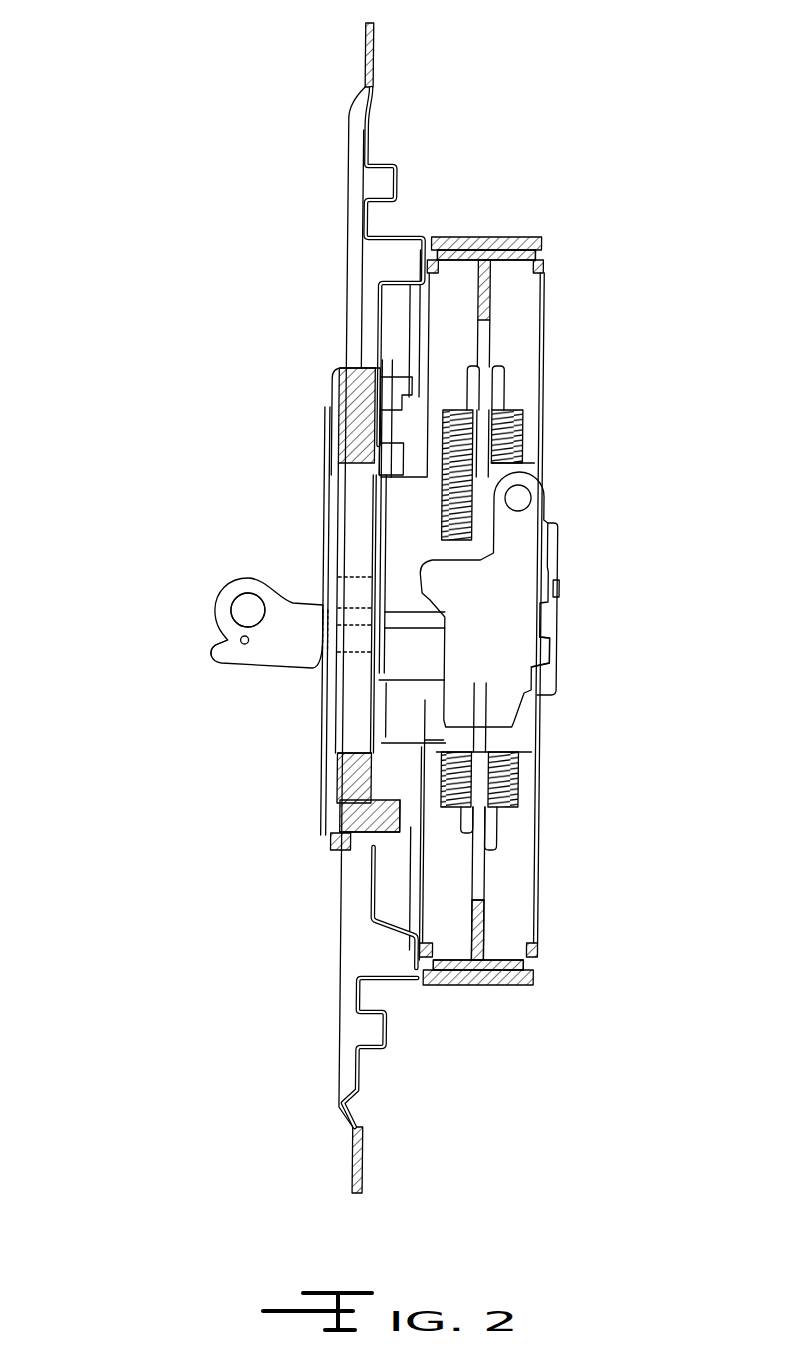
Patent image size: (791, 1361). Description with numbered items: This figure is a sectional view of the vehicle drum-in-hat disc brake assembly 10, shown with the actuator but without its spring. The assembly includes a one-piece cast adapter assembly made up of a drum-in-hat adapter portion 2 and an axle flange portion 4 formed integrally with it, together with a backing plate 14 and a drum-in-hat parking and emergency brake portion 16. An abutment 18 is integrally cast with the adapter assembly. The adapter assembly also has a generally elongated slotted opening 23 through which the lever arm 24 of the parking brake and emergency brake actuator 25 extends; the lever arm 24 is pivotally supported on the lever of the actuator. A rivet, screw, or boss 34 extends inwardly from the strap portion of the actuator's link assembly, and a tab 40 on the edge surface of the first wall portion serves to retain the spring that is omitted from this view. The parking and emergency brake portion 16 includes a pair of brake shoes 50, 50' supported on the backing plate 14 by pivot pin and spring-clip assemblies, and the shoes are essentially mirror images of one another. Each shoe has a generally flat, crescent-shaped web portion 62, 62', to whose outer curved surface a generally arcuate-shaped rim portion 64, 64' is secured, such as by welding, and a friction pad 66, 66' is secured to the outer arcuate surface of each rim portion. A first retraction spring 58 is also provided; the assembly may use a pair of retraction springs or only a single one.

The vehicle drum-in-hat disc brake assembly 10 is at (189, 92).
The backing plate 14 is at (378, 40).
The drum-in-hat adapter portion 2 is at (549, 517).
The axle flange portion 4 is at (352, 746).
The drum-in-hat parking and emergency brake portion 16 is at (221, 588).
The abutment 18 is at (558, 539).
The slotted opening 23 is at (343, 578).
The lever arm 24 is at (289, 668).
The parking brake and emergency brake actuator 25 is at (208, 654).
The boss 34 is at (561, 590).
The tab 40 is at (546, 649).
The brake shoe 50 is at (536, 218).
The first retraction spring 58 is at (453, 805).
The web portion 62 is at (493, 548).
The rim portion 64 is at (480, 212).
The friction pad 66 is at (547, 238).
The brake shoe 50' is at (506, 987).
The web portion 62' is at (474, 983).
The rim portion 64' is at (460, 1025).
The friction pad 66' is at (530, 975).